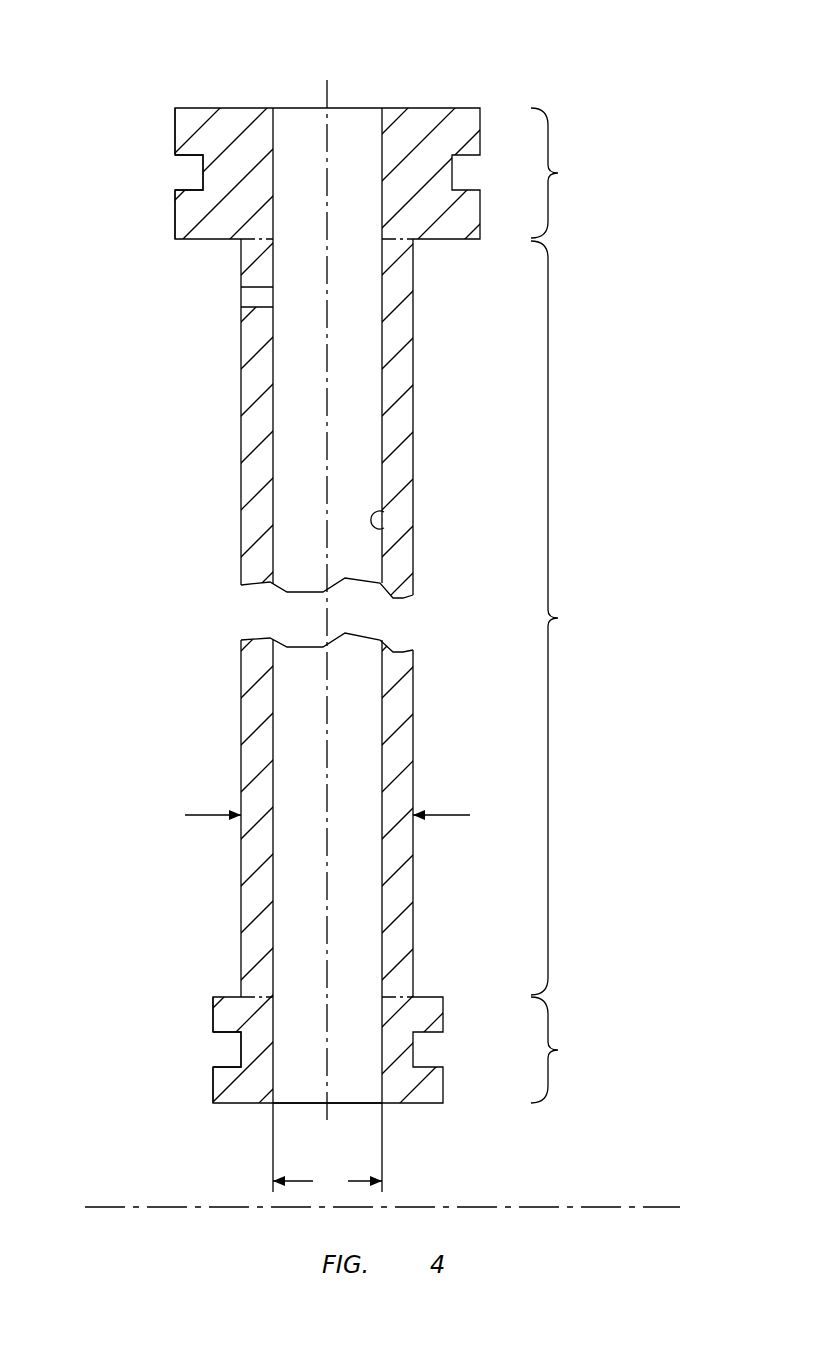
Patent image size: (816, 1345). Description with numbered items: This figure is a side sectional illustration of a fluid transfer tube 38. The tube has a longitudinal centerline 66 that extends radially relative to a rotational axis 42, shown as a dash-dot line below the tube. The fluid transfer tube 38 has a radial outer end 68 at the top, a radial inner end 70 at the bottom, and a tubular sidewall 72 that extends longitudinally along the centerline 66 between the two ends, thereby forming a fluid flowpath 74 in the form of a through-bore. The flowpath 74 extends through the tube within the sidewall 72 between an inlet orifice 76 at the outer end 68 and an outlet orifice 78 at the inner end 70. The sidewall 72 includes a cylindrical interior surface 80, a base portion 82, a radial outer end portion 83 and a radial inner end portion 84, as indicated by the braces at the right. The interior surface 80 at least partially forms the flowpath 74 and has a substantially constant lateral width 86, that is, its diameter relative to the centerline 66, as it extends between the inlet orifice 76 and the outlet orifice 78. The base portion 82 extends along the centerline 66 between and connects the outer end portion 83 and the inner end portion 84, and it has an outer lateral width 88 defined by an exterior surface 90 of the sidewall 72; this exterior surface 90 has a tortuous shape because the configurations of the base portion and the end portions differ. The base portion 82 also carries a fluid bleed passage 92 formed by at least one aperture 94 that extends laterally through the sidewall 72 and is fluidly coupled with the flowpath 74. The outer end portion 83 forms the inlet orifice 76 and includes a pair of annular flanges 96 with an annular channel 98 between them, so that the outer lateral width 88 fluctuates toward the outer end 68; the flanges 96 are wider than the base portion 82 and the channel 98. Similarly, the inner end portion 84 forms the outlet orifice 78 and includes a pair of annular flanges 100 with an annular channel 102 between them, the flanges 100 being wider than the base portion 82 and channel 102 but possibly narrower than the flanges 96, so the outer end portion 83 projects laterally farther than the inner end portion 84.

The fluid transfer tube 38 is at (508, 85).
The rotational axis 42 is at (668, 1205).
The longitudinal centerline 66 is at (328, 80).
The radial outer end 68 is at (228, 107).
The radial inner end 70 is at (237, 1104).
The tubular sidewall 72 is at (415, 430).
The fluid flowpath 74 is at (353, 150).
The inlet orifice 76 is at (297, 107).
The outlet orifice 78 is at (293, 1105).
The cylindrical interior surface 80 is at (384, 528).
The base portion 82 is at (563, 618).
The radial outer end portion 83 is at (563, 173).
The radial inner end portion 84 is at (563, 1050).
The lateral width 86 is at (327, 1149).
The outer lateral width 88 is at (452, 815).
The exterior surface 90 is at (415, 697).
The fluid bleed passage 92 is at (240, 301).
The aperture 94 is at (241, 292).
The annular flanges 96 is at (175, 130).
The annular channel 98 is at (188, 172).
The annular flanges 100 is at (213, 1007).
The annular channel 102 is at (228, 1049).